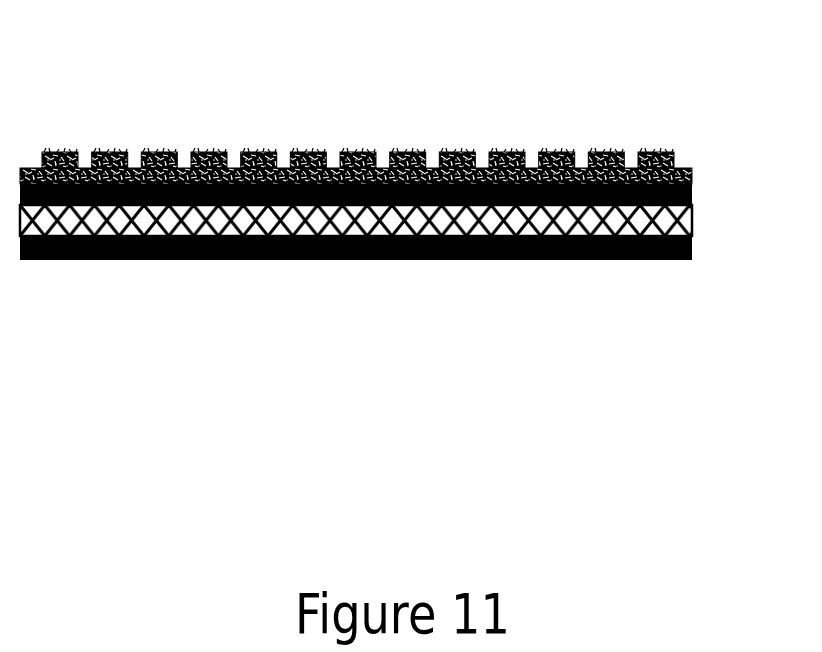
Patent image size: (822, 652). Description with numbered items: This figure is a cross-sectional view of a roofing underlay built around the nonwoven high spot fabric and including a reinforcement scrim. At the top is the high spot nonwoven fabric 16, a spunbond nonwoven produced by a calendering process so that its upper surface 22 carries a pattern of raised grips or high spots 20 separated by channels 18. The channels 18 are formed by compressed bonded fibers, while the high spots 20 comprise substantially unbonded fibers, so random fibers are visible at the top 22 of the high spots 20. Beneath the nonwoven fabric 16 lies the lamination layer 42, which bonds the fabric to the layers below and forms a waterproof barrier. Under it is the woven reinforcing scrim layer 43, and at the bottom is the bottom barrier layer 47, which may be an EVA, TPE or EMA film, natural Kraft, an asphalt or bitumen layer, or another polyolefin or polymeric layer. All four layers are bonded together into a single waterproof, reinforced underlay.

The high spot nonwoven fabric 16 is at (692, 173).
The channels 18 is at (333, 167).
The high spots 20 is at (580, 165).
The upper surface 22 is at (458, 147).
The lamination layer 42 is at (692, 195).
The woven reinforcing scrim layer 43 is at (692, 220).
The bottom barrier layer 47 is at (638, 260).